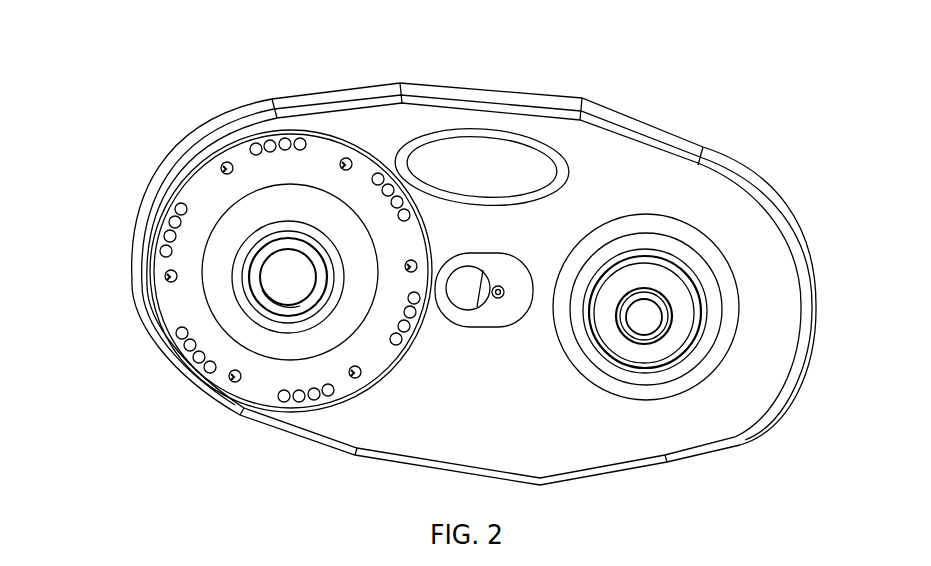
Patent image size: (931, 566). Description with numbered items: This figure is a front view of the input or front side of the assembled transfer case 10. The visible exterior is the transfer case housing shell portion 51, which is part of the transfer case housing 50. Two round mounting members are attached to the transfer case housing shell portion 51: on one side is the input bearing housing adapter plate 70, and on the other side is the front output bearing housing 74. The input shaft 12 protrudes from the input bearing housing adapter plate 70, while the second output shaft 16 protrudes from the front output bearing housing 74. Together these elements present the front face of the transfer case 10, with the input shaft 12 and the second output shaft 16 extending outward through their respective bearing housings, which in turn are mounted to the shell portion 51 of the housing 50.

The transfer case 10 is at (121, 70).
The transfer case housing 50 is at (597, 104).
The transfer case housing shell portion 51 is at (712, 214).
The input bearing housing adapter plate 70 is at (193, 298).
The input shaft 12 is at (260, 302).
The front output bearing housing 74 is at (713, 298).
The second output shaft 16 is at (660, 326).